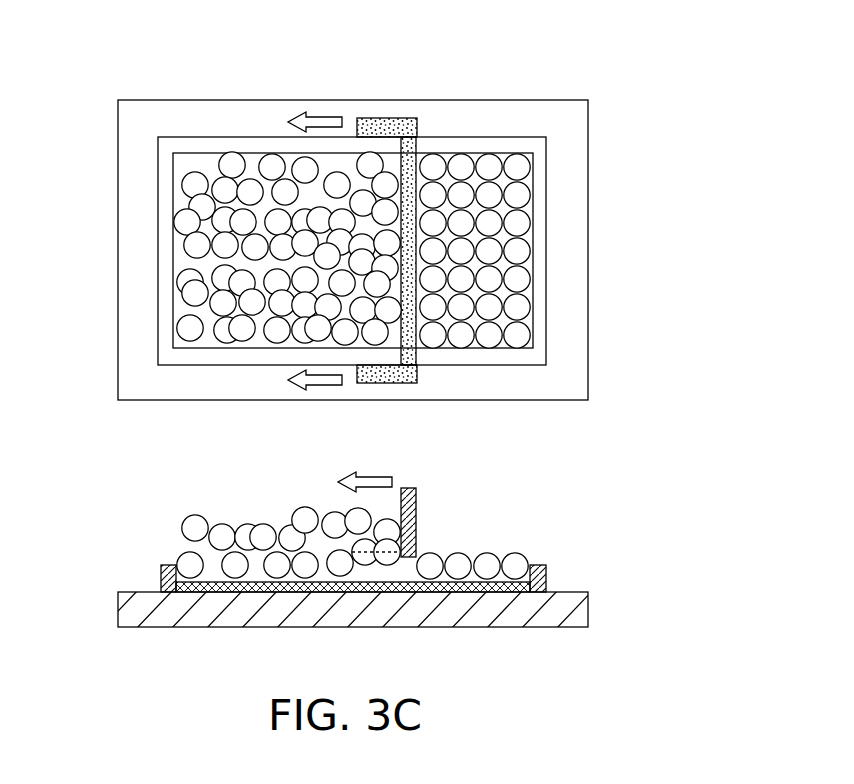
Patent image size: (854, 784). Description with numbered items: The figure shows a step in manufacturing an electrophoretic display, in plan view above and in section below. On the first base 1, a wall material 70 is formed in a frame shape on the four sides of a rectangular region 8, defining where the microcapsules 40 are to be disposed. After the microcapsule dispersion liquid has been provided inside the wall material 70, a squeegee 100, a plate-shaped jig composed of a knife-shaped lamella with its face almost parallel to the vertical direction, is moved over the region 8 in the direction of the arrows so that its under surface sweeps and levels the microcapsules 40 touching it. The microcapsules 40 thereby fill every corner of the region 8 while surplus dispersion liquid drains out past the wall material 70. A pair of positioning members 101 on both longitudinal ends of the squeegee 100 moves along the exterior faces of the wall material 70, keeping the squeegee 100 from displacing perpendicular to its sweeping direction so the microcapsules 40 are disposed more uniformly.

The first base 1 is at (589, 155).
The region 8 is at (207, 170).
The microcapsules 40 is at (184, 180).
The wall material 70 is at (528, 137).
The squeegee 100 is at (410, 338).
The positioning members 101 is at (384, 118).